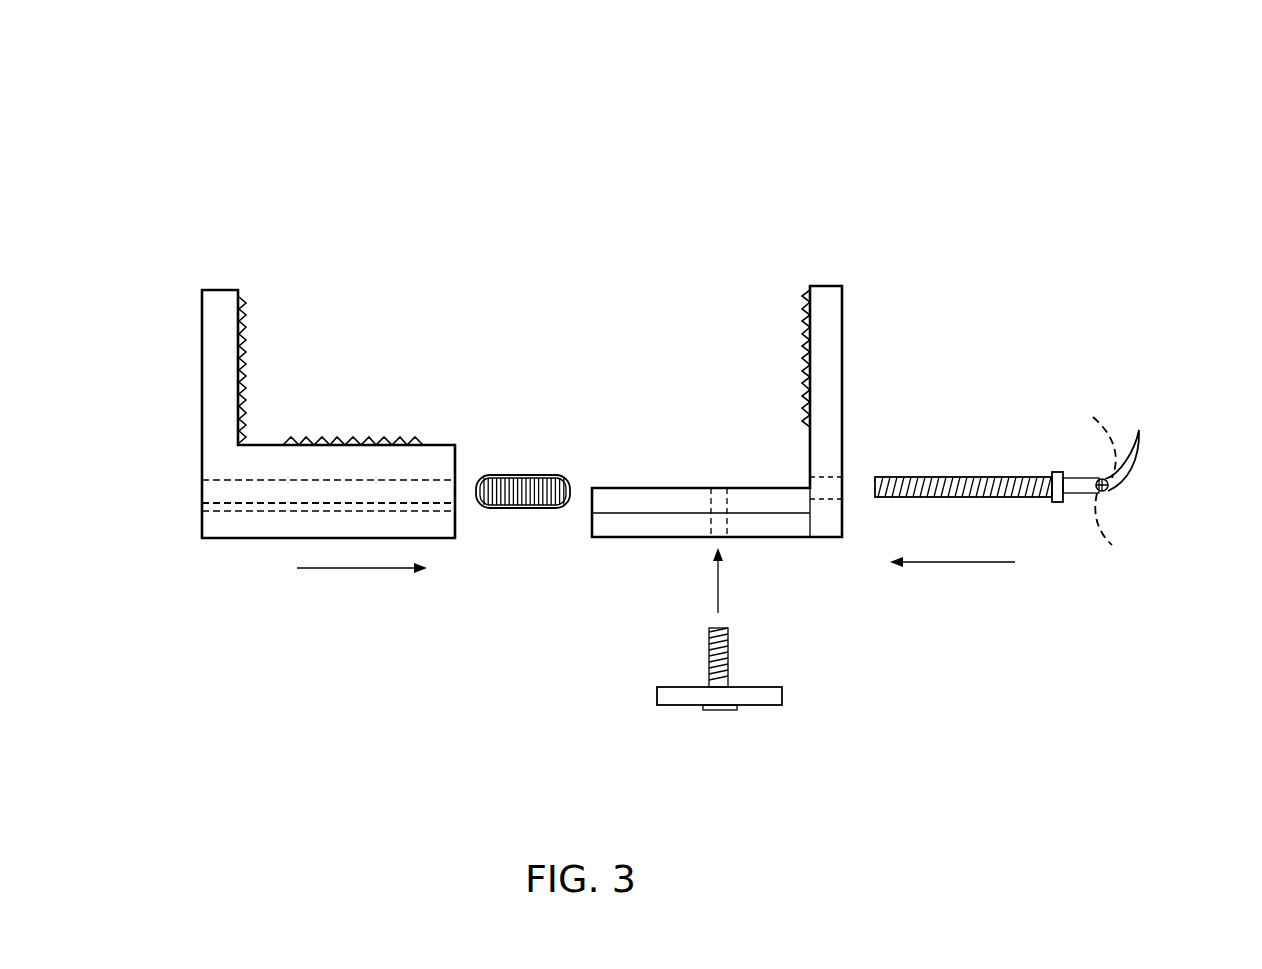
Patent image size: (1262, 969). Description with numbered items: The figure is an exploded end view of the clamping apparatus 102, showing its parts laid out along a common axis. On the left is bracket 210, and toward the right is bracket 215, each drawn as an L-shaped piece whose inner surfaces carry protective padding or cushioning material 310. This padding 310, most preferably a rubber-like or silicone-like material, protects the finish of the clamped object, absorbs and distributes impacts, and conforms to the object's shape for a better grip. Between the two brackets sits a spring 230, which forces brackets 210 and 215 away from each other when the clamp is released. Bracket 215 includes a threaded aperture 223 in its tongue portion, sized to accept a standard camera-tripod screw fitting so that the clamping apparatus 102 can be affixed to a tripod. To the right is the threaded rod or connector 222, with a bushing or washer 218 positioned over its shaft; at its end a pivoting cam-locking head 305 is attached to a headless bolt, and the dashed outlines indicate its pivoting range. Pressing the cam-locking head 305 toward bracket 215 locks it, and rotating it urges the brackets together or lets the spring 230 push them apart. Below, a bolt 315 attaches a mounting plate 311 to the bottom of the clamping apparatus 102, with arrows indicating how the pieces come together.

The clamping mechanism 102 is at (830, 100).
The bracket 210 is at (218, 290).
The bracket 215 is at (822, 285).
The bushing or washer 218 is at (1053, 471).
The threaded rod or connector 222 is at (960, 478).
The threaded aperture 223 is at (723, 487).
The spring 230 is at (530, 473).
The cam-locking head 305 is at (1107, 495).
The protective padding or cushioning material 310 is at (355, 438).
The mounting plate 311 is at (657, 692).
The bolt 315 is at (723, 712).